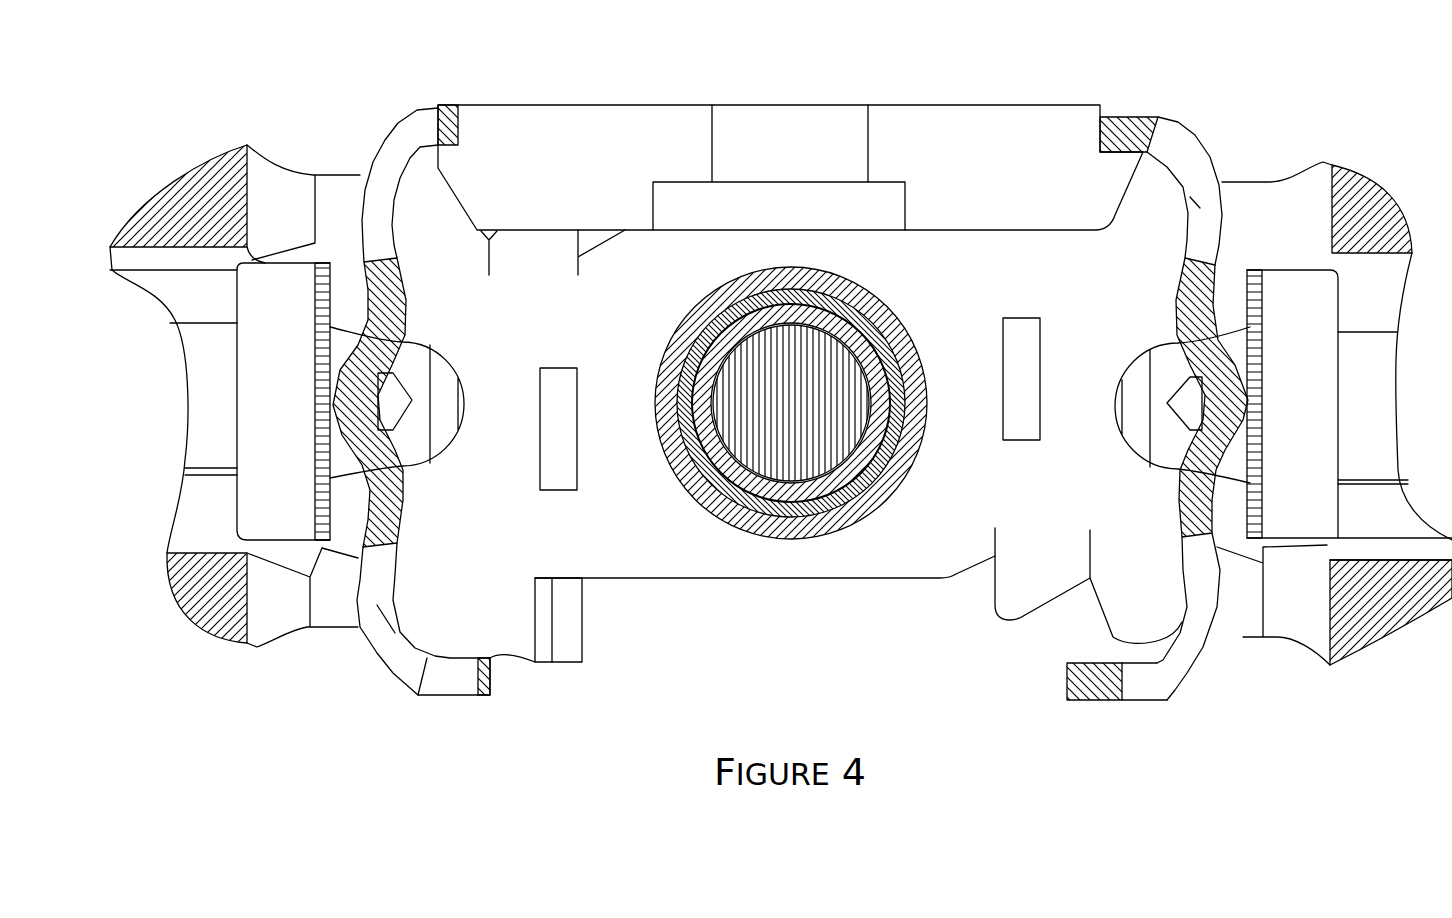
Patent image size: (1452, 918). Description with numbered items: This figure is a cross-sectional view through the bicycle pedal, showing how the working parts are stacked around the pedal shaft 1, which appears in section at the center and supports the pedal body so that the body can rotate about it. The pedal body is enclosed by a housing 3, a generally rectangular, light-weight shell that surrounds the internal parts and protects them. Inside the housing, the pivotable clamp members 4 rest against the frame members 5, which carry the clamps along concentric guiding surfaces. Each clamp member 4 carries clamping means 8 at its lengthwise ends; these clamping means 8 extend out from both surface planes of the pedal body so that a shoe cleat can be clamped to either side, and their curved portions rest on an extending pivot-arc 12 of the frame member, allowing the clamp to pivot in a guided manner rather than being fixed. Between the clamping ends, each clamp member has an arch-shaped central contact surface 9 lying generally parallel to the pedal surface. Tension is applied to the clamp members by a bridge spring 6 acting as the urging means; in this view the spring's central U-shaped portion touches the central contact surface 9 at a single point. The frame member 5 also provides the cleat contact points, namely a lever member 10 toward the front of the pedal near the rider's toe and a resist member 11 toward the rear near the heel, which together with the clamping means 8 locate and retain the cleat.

The pedal shaft 1 is at (823, 483).
The housing 3 is at (1370, 187).
The clamp member 4 is at (1205, 660).
The frame member 5 is at (658, 583).
The bridge spring 6 is at (250, 437).
The clamping means 8 is at (433, 107).
The central contact surface 9 is at (330, 393).
The lever member 10 is at (562, 663).
The resist member 11 is at (992, 612).
The extending pivot-arc 12 is at (1113, 638).